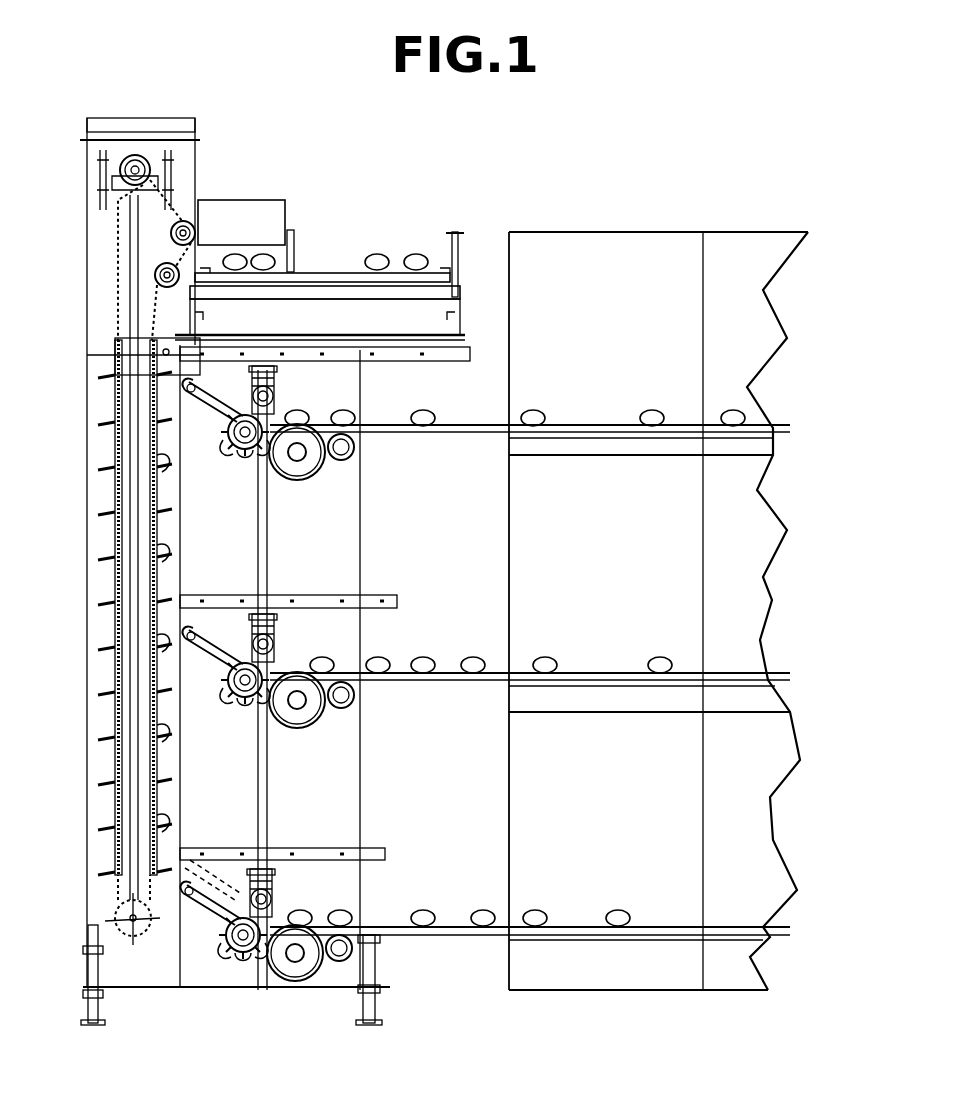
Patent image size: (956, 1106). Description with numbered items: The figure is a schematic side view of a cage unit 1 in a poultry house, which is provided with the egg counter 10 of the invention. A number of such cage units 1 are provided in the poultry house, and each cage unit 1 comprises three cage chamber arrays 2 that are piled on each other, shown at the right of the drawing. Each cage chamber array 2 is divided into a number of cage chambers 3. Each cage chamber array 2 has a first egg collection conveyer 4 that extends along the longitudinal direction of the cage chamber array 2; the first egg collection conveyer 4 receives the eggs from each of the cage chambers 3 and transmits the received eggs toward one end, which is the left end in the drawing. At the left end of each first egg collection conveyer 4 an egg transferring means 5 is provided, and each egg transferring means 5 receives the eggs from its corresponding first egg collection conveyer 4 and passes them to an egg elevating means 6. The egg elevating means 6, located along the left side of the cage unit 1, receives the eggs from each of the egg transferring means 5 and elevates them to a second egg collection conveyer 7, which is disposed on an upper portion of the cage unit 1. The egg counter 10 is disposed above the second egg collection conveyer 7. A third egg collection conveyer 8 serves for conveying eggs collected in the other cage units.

The cage unit 1 is at (610, 200).
The cage chamber array 2 is at (795, 302).
The cage chamber 3 is at (600, 324).
The first egg collection conveyer 4 is at (448, 425).
The egg transferring means 5 is at (238, 468).
The egg elevating means 6 is at (106, 492).
The second egg collection conveyer 7 is at (290, 242).
The third egg collection conveyer 8 is at (375, 242).
The egg counter 10 is at (242, 210).